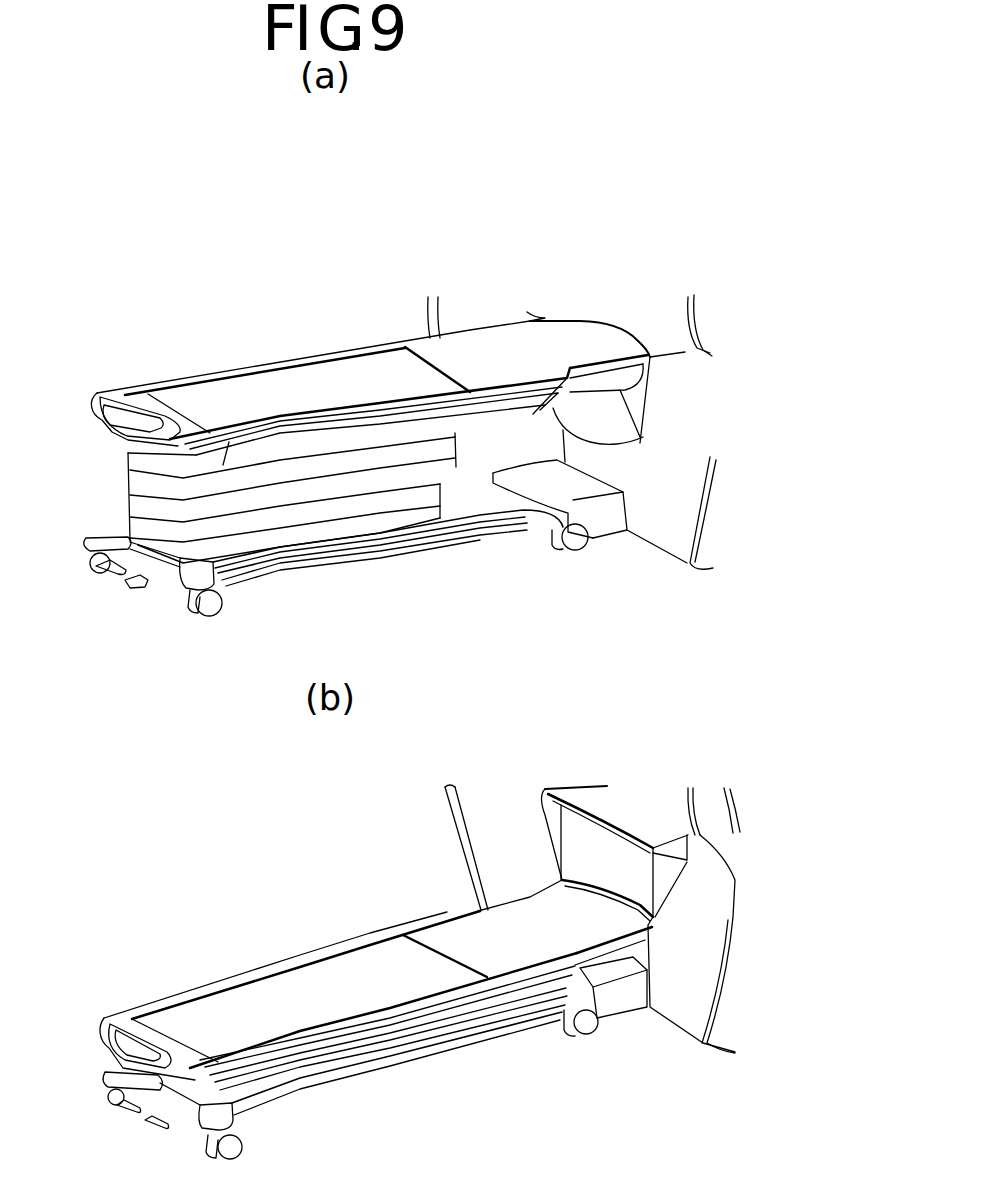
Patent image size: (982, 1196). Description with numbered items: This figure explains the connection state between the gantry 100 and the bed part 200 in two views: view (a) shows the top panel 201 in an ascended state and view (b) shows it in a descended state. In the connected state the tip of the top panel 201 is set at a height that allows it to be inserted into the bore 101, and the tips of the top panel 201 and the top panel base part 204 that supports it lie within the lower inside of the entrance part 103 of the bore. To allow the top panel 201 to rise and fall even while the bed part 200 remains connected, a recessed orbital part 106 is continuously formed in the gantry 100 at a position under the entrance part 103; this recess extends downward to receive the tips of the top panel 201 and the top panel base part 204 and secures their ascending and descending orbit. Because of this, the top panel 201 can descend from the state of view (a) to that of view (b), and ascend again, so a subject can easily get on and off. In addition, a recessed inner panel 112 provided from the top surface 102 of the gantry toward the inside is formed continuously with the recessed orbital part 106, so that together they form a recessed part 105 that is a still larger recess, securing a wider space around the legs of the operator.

The gantry 100 is at (426, 312).
The bore 101 is at (607, 302).
The top surface 102 is at (713, 970).
The entrance part 103 is at (515, 298).
The recessed part 105 is at (511, 855).
The recessed orbital part 106 is at (620, 408).
The recessed inner panel 112 is at (693, 935).
The bed part 200 is at (203, 395).
The top panel 201 is at (352, 387).
The top panel base part 204 is at (607, 382).